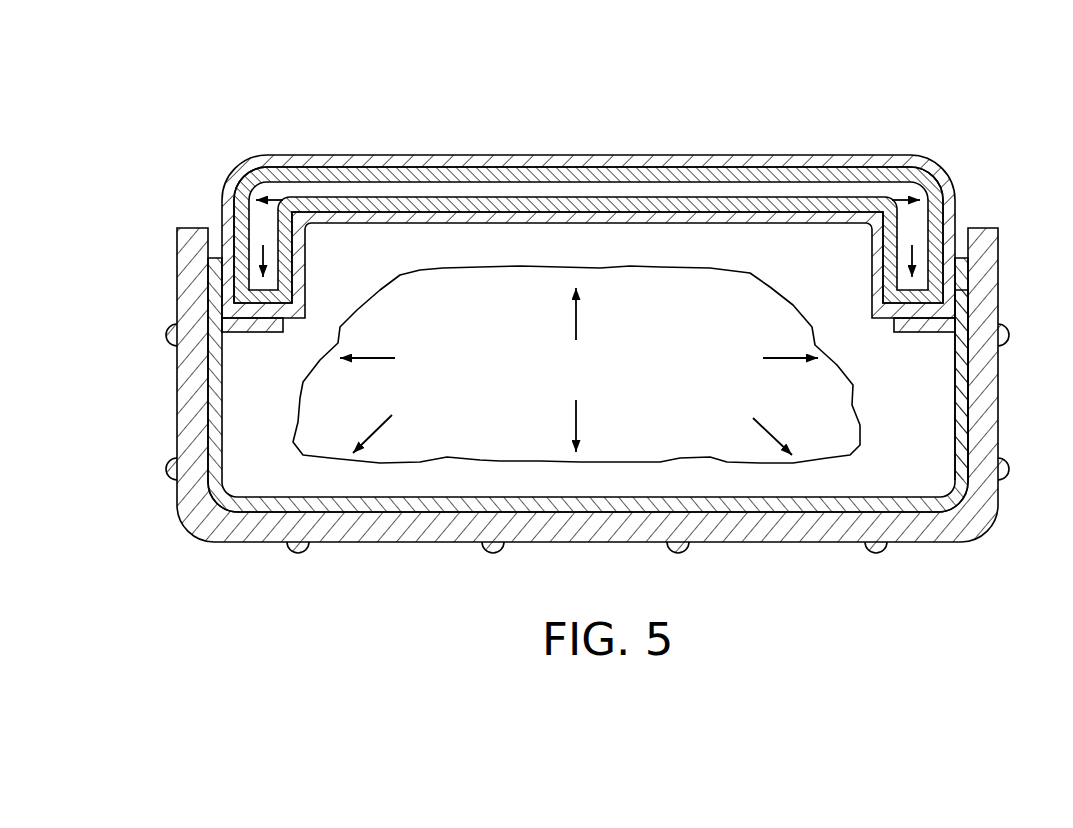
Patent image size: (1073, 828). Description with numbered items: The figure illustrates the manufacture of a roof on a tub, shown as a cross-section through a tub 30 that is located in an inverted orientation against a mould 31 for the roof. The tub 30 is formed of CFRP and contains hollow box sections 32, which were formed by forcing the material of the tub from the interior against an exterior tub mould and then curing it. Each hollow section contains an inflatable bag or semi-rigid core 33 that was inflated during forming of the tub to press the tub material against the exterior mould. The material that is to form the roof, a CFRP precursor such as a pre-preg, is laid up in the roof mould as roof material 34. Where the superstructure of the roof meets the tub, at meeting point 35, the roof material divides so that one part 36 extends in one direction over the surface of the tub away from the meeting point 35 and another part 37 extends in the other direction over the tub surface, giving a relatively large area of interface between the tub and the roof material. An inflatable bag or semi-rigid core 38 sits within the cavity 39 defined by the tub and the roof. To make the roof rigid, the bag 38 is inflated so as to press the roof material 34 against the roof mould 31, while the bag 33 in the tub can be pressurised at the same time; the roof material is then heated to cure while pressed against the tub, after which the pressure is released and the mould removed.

The tub 30 is at (933, 160).
The mould 31 is at (998, 402).
The hollow box sections 32 is at (913, 232).
The inflatable bag or semi-rigid core 33 is at (747, 173).
The roof material 34 is at (752, 507).
The meeting point 35 is at (962, 325).
The part of the roof material 36 is at (960, 272).
The part of the roof material 37 is at (920, 327).
The inflatable bag or semi-rigid core 38 is at (853, 457).
The cavity 39 is at (892, 465).